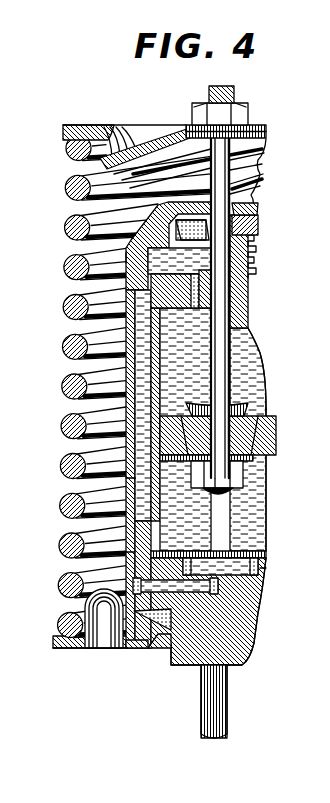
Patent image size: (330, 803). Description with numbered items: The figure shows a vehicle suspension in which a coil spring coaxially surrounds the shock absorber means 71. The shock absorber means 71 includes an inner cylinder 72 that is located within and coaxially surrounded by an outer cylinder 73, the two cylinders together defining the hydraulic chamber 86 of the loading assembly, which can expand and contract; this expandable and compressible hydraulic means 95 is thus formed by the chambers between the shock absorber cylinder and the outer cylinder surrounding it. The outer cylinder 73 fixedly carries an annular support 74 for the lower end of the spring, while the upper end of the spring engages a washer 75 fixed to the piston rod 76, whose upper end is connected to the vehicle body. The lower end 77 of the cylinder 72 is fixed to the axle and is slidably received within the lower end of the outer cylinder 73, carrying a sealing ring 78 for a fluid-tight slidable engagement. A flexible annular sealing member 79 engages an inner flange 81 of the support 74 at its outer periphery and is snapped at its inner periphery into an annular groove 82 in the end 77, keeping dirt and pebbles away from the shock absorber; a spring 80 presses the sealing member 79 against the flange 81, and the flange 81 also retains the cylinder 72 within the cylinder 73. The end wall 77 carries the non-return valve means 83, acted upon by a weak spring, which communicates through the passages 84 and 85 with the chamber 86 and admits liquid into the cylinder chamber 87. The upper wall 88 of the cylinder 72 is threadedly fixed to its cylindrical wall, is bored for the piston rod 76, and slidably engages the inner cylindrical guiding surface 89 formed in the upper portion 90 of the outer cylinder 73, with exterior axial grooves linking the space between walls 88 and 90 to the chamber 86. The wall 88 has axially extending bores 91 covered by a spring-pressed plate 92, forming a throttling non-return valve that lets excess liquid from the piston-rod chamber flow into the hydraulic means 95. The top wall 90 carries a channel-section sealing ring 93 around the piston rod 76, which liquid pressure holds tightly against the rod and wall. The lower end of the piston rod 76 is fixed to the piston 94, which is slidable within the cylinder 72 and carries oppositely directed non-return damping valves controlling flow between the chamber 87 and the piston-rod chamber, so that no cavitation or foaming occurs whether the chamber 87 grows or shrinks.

The shock absorber means 71 is at (256, 356).
The cylinder 72 is at (148, 343).
The outer cylinder 73 is at (135, 448).
The annular support 74 is at (58, 629).
The washer 75 is at (58, 120).
The piston rod 76 is at (242, 134).
The lower end 77 is at (249, 626).
The sealing ring 78 is at (175, 594).
The flexible annular sealing member 79 is at (148, 645).
The spring 80 is at (208, 611).
The inner flange 81 is at (120, 642).
The annular groove 82 is at (177, 660).
The non-return valve means 83 is at (207, 545).
The passage 84 is at (208, 564).
The passage 85 is at (133, 549).
The hydraulic chamber 86 is at (128, 474).
The cylinder chamber 87 is at (256, 474).
The upper wall 88 is at (246, 311).
The inner cylindrical guiding surface 89 is at (123, 250).
The upper portion 90 is at (249, 201).
The axially extending bores 91 is at (187, 306).
The plate 92 is at (212, 283).
The sealing ring 93 is at (251, 214).
The piston 94 is at (270, 434).
The expandable and compressible hydraulic means 95 is at (262, 575).